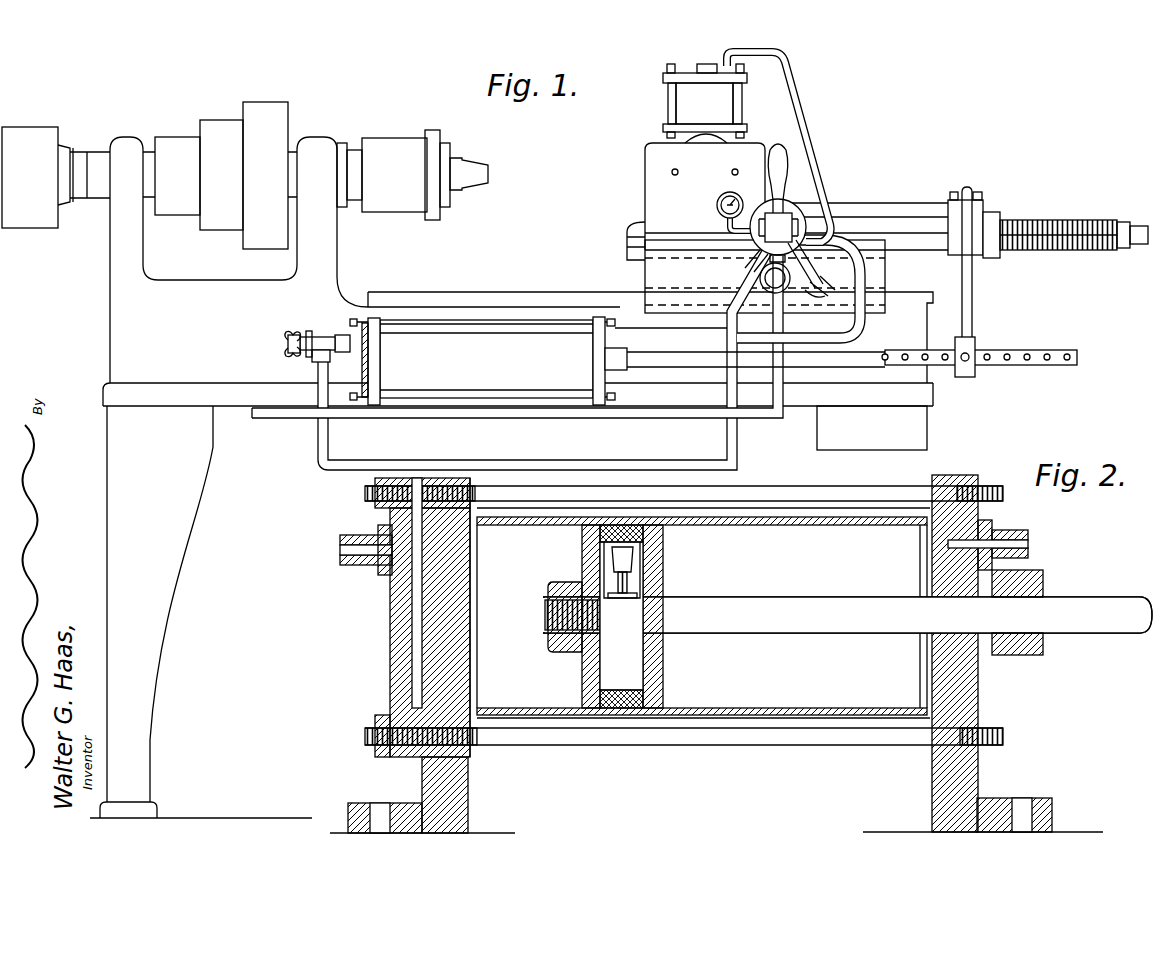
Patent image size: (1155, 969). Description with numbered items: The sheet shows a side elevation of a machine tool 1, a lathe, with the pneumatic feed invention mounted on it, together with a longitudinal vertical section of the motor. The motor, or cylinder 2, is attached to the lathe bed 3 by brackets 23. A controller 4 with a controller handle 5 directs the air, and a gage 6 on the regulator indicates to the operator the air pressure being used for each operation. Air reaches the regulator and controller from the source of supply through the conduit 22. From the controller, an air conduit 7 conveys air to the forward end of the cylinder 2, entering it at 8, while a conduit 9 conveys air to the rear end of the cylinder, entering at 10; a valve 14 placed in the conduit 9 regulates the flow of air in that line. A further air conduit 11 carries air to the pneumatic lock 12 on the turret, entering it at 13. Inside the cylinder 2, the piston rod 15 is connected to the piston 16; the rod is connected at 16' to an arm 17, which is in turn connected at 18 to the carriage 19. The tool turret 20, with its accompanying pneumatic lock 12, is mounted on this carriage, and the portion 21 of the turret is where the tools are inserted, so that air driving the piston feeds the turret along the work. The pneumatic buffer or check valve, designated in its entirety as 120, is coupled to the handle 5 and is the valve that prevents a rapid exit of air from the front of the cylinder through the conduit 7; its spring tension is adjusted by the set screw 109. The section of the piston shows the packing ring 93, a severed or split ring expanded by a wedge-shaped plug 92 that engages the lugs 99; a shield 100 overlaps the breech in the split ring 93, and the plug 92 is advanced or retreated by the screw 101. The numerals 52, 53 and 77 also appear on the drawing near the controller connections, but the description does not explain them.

In FIG. 1, the machine tool 1 is at (107, 462).
In FIG. 1, the motor 2 is at (463, 340).
In FIG. 2, the motor 2 is at (730, 745).
In FIG. 1, the lathe bed 3 is at (328, 302).
In FIG. 1, the controller 4 is at (793, 208).
In FIG. 1, the controller handle 5 is at (780, 147).
In FIG. 1, the gage 6 is at (721, 198).
In FIG. 1, the air conduit 7 is at (745, 280).
In FIG. 1, the cylinder inlet point 8 is at (349, 334).
In FIG. 2, the cylinder inlet point 8 is at (350, 535).
In FIG. 1, the conduit 9 is at (757, 310).
In FIG. 1, the cylinder inlet point 10 is at (617, 340).
In FIG. 2, the cylinder inlet point 10 is at (1020, 530).
In FIG. 1, the air conduit 11 is at (750, 289).
In FIG. 1, the pneumatic lock 12 is at (680, 109).
In FIG. 1, the lock inlet point 13 is at (727, 80).
In FIG. 1, the valve 14 is at (790, 300).
In FIG. 1, the piston rod 15 is at (905, 347).
In FIG. 2, the piston rod 15 is at (768, 605).
In FIG. 2, the piston 16 is at (642, 616).
In FIG. 1, the piston rod connection 16' is at (987, 350).
In FIG. 1, the arm 17 is at (970, 302).
In FIG. 1, the arm connection 18 is at (985, 200).
In FIG. 1, the carriage 19 is at (885, 280).
In FIG. 1, the tool turret 20 is at (645, 195).
In FIG. 1, the tool-holding portion 21 is at (733, 172).
In FIG. 1, the conduit 22 is at (630, 418).
In FIG. 2, the brackets 23 is at (420, 795).
In FIG. 1, the fitting 52 is at (766, 296).
In FIG. 1, the fitting 53 is at (740, 292).
In FIG. 1, the rod 77 is at (819, 269).
In FIG. 2, the wedge-shaped plug 92 is at (630, 556).
In FIG. 2, the packing ring 93 is at (603, 675).
In FIG. 2, the lugs 99 is at (605, 553).
In FIG. 2, the shield 100 is at (588, 538).
In FIG. 2, the screw 101 is at (630, 585).
In FIG. 1, the set screw 109 is at (286, 348).
In FIG. 1, the check valve 120 is at (310, 335).